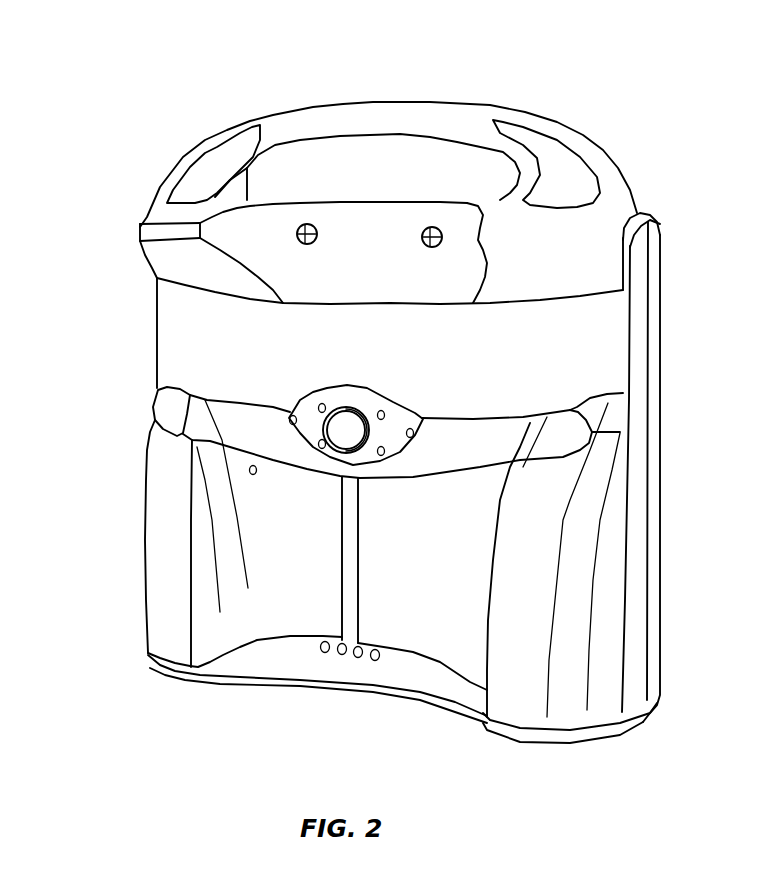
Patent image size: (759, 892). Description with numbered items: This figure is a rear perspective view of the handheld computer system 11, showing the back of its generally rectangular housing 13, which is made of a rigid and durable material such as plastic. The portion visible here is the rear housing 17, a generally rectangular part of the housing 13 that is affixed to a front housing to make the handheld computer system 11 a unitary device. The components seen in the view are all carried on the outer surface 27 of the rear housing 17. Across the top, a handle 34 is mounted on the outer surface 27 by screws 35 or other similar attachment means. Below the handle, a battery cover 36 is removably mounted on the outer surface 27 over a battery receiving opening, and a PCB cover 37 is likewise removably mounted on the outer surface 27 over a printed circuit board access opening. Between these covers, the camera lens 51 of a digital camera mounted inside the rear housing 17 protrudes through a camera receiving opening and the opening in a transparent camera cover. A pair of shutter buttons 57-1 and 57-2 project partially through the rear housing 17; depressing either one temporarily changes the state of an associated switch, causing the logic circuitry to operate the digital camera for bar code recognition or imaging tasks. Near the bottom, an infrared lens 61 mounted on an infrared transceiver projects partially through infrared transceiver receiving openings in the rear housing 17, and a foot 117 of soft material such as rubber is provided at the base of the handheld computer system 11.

The handheld computer system 11 is at (354, 612).
The housing 13 is at (686, 467).
The rear housing 17 is at (638, 560).
The outer surface 27 is at (432, 295).
The handle 34 is at (388, 145).
The screws 35 is at (398, 145).
The battery cover 36 is at (608, 567).
The PCB cover 37 is at (275, 545).
The camera lens 51 is at (509, 394).
The shutter button 57-1 is at (656, 408).
The shutter button 57-2 is at (119, 397).
The infrared lens 61 is at (313, 685).
The foot 117 is at (570, 748).